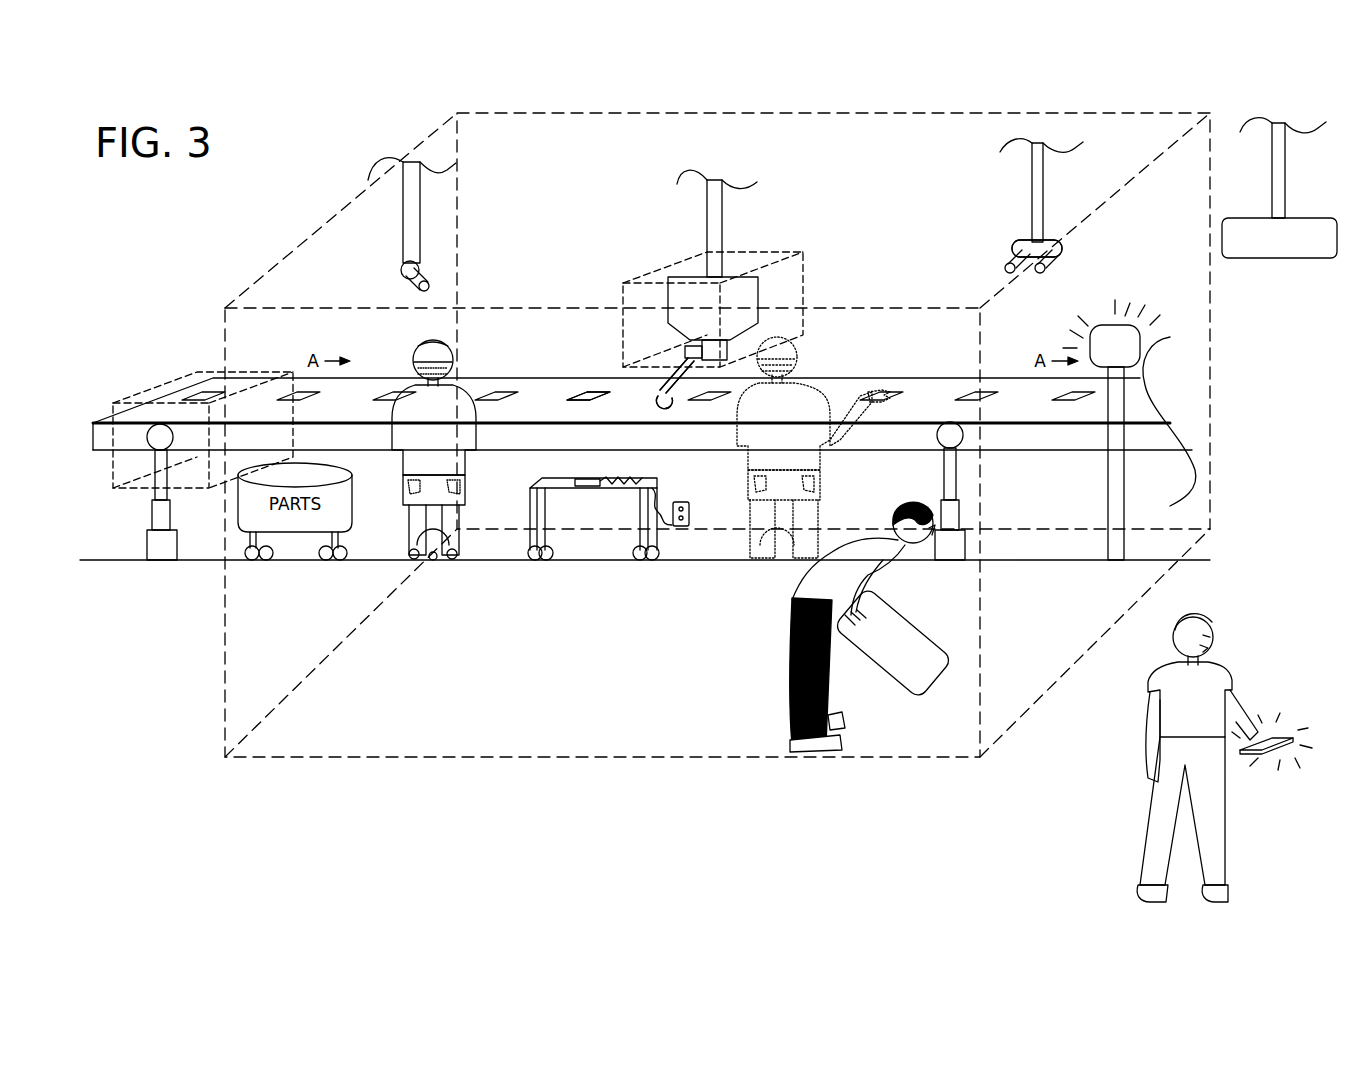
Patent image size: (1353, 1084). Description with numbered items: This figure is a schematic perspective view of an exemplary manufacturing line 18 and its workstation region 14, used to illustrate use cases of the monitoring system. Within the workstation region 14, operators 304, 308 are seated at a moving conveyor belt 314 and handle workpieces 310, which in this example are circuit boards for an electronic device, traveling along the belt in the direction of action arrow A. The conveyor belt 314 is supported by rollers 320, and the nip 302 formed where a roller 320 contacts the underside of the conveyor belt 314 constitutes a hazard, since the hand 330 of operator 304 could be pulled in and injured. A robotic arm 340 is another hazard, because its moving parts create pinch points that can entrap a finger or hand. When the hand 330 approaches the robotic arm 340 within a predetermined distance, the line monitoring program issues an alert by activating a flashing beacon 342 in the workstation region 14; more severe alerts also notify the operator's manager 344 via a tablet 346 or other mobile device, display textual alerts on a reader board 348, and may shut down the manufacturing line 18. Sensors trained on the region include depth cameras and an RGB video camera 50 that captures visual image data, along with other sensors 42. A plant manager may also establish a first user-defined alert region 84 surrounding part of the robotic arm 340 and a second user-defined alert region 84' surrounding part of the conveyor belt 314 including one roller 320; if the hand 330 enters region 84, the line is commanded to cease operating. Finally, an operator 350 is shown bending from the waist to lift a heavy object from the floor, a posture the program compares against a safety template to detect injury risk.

The workstation region 14 is at (548, 118).
The manufacturing line 18 is at (210, 242).
The sensor 42 is at (403, 265).
The RGB video camera 50 is at (1050, 262).
The first user-defined alert region 84 is at (711, 289).
The second user-defined alert region 84' is at (201, 418).
The nip 302 is at (933, 429).
The operator 304 is at (804, 447).
The operator 308 is at (434, 450).
The workpieces 310 is at (500, 396).
The conveyor belt 314 is at (620, 394).
The rollers 320 is at (158, 442).
The hand 330 is at (872, 390).
The robotic arm 340 is at (668, 388).
The flashing beacon 342 is at (1133, 430).
The operator's manager 344 is at (1148, 684).
The tablet 346 is at (1286, 731).
The reader board 348 is at (1300, 260).
The operator 350 is at (790, 702).